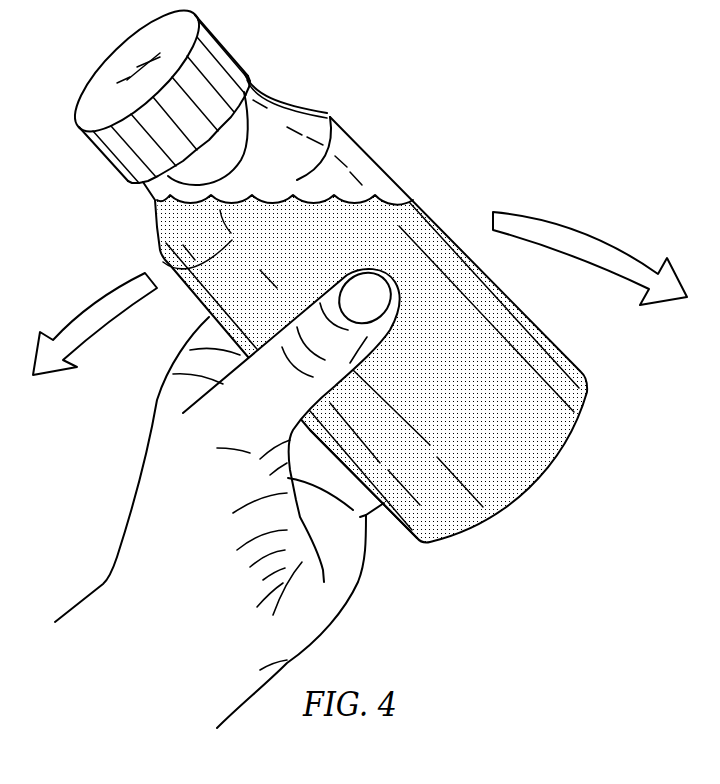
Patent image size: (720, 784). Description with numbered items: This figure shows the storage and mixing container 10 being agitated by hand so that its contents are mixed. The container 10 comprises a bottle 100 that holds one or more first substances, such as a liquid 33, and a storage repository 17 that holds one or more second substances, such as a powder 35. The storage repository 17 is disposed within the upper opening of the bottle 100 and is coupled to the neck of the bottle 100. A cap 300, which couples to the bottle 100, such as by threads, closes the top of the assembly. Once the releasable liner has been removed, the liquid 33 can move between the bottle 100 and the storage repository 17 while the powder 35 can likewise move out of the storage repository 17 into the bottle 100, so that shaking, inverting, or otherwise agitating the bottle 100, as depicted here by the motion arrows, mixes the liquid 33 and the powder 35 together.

The storage and mixing container 10 is at (348, 271).
The storage repository 17 is at (257, 112).
The liquid 33 is at (388, 200).
The powder 35 is at (273, 143).
The bottle 100 is at (577, 430).
The cap 300 is at (220, 43).